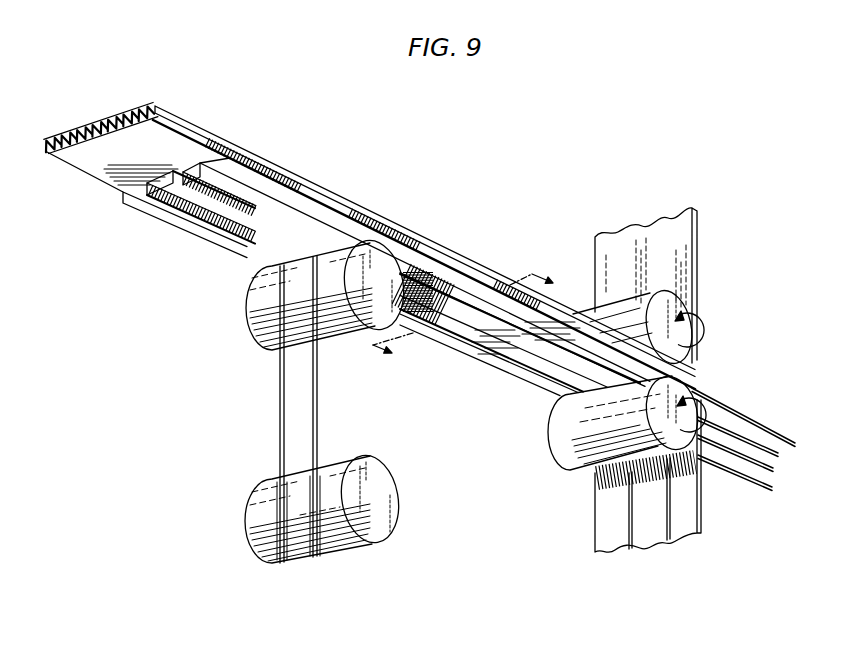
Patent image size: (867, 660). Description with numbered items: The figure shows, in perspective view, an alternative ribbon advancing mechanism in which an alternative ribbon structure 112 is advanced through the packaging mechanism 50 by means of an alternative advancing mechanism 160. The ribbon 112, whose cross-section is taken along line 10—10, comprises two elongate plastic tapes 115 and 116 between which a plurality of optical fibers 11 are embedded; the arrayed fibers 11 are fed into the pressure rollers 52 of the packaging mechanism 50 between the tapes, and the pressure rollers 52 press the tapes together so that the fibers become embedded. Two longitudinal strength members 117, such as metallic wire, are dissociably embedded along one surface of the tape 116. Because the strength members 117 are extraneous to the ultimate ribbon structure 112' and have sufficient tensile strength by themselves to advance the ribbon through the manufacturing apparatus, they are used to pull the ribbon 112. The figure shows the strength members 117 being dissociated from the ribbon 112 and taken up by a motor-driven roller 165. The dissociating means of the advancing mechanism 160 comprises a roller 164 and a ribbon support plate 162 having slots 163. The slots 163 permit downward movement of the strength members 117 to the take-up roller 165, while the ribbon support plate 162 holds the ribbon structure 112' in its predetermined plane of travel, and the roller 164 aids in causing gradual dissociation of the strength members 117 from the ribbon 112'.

The section line 10 is at (474, 322).
The optical fibers 11 is at (82, 128).
The ribbon structure 112 is at (424, 254).
The ultimate ribbon structure 112' is at (425, 223).
The elongate plastic tape 115 is at (630, 237).
The elongate plastic tape 116 is at (605, 513).
The longitudinal strength members 117 is at (278, 430).
The advancing mechanism 160 is at (300, 418).
The ribbon support plate 162 is at (158, 207).
The slots 163 is at (243, 235).
The roller 164 is at (260, 307).
The motor-driven take-up roller 165 is at (258, 510).
The ribbon packaging mechanism 50 is at (626, 391).
The pressure rollers 52 is at (687, 337).